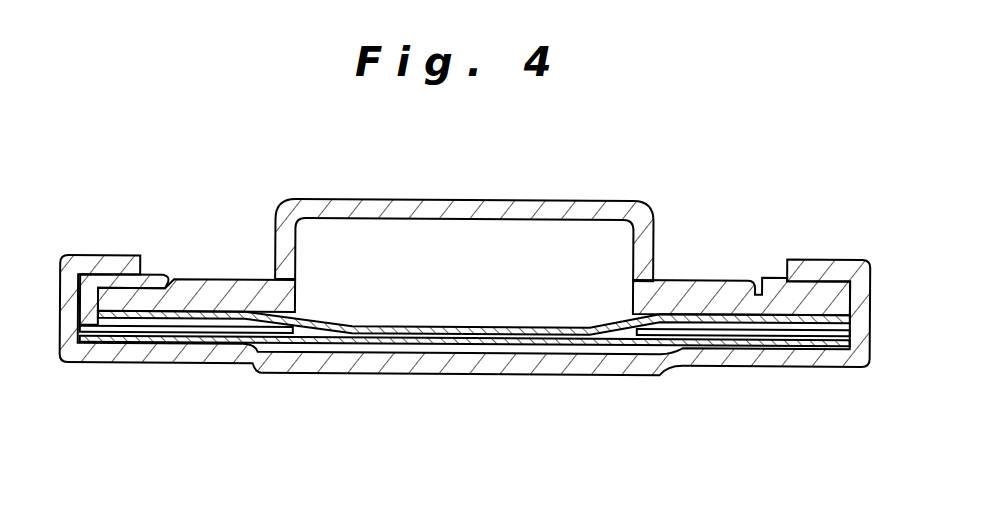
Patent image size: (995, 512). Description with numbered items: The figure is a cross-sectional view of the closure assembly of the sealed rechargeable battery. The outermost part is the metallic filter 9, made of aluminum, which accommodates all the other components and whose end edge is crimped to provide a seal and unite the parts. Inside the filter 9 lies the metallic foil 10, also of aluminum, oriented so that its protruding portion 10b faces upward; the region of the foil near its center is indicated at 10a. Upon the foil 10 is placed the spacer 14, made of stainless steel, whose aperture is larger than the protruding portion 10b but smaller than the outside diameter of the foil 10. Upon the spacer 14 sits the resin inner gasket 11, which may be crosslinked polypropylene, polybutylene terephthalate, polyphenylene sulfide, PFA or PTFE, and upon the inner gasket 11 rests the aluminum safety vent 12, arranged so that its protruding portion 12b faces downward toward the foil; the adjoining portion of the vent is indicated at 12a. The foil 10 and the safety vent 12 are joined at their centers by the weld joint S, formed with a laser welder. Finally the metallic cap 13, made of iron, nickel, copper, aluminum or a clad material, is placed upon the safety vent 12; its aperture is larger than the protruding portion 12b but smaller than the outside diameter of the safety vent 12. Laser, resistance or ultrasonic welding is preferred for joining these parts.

The metallic filter 9 is at (715, 360).
The metallic foil 10 is at (464, 376).
The housing portion 10a is at (540, 338).
The protruding portion 10b is at (440, 340).
The resin inner gasket 11 is at (770, 278).
The safety vent 12 is at (473, 355).
The diaphragm portion 12a is at (585, 327).
The protruding portion 12b is at (413, 326).
The metallic cap 13 is at (640, 212).
The spacer 14 is at (243, 340).
The weld joint S is at (468, 326).